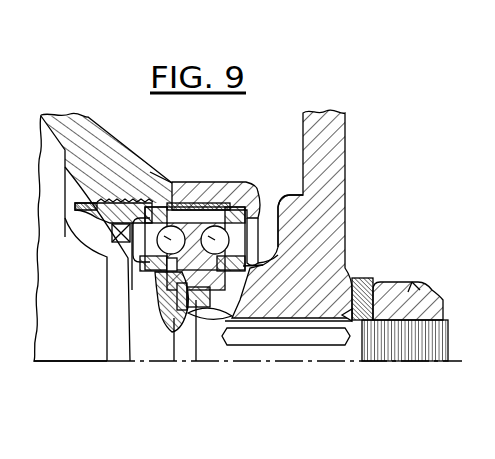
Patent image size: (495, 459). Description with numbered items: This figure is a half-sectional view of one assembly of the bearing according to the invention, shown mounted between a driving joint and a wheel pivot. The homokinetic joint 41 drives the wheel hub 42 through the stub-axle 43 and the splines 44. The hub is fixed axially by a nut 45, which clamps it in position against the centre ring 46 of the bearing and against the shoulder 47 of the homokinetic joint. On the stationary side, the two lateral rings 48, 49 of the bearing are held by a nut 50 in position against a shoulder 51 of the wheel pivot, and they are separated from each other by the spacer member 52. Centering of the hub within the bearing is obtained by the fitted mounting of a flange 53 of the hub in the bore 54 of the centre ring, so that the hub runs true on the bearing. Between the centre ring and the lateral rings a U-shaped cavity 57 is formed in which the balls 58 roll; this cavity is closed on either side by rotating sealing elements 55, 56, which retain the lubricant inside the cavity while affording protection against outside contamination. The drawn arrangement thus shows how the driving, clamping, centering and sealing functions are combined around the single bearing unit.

The homokinetic joint 41 is at (60, 338).
The wheel hub 42 is at (330, 185).
The stub-axle 43 is at (290, 352).
The splines 44 is at (252, 338).
The nut 45 is at (402, 284).
The centre ring 46 is at (204, 215).
The shoulder 47 is at (157, 300).
The lateral ring 48 is at (115, 242).
The lateral ring 49 is at (262, 215).
The nut 50 is at (105, 212).
The shoulder 51 is at (278, 210).
The spacer member 52 is at (248, 200).
The flange 53 is at (190, 314).
The bore 54 is at (212, 301).
The rotating sealing element 55 is at (135, 280).
The rotating sealing element 56 is at (262, 268).
The U-shaped cavity 57 is at (172, 183).
The balls 58 is at (187, 205).